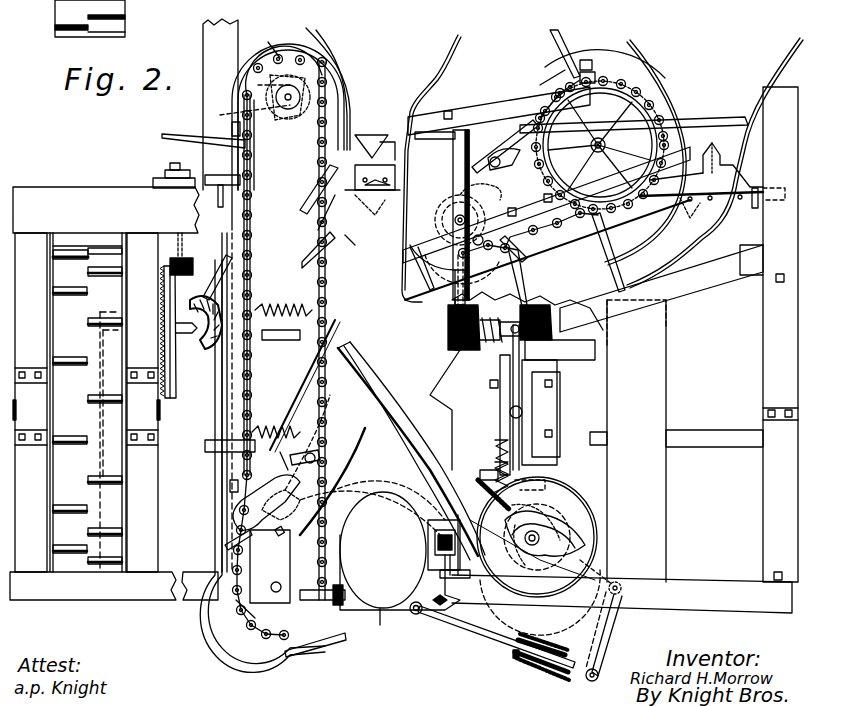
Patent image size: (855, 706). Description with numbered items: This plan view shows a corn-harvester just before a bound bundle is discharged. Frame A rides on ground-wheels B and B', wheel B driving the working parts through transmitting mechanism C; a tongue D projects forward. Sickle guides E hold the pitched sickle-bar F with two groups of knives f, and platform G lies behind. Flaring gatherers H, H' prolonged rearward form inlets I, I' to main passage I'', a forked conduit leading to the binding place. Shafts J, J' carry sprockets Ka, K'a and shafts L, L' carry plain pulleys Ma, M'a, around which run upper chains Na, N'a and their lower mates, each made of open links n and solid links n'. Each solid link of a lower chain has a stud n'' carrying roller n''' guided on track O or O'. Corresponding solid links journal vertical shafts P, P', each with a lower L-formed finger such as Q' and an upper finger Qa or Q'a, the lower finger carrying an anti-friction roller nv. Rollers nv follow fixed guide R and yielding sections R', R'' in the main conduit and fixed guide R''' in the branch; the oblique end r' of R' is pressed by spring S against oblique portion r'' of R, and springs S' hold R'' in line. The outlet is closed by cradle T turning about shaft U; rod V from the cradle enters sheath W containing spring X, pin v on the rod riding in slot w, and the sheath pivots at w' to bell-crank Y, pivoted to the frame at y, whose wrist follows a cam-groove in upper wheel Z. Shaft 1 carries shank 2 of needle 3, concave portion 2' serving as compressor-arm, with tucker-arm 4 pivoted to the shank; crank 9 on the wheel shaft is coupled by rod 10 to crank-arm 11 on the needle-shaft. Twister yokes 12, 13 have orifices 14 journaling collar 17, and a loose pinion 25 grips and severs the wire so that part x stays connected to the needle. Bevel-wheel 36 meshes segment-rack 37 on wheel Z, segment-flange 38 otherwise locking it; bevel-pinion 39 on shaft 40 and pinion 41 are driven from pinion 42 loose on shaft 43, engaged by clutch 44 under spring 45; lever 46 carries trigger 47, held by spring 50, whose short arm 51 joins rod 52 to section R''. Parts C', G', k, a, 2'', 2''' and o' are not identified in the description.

The frame A is at (401, 400).
The ground-wheel B is at (86, 402).
The ground-wheel B' is at (694, 334).
The transmitting mechanism C is at (196, 315).
The gear shaft C' is at (101, 442).
The tongue D is at (220, 295).
The sickle guides E is at (559, 152).
The sickle-bar F is at (565, 186).
The knives f is at (527, 207).
The platform G is at (360, 238).
The rear guide G' is at (569, 278).
The flaring gatherer H is at (383, 164).
The flaring gatherer H' is at (704, 159).
The inlet I is at (383, 222).
The inlet I' is at (584, 216).
The main passage I'' is at (411, 449).
The vertical shaft J is at (247, 114).
The vertical shaft J' is at (455, 232).
The sprocket Ka is at (258, 86).
The sprocket K'a is at (546, 205).
The chain roller k is at (484, 235).
The vertical shaft L is at (280, 339).
The vertical shaft L' is at (600, 145).
The plain pulley Ma is at (236, 618).
The plain pulley M'a is at (501, 183).
The endless chain Na is at (335, 92).
The endless chain N'a is at (576, 166).
The open links n is at (258, 383).
The solid links n' is at (225, 548).
The stud n'' is at (404, 280).
The roller n''' is at (393, 253).
The anti-friction roller nv is at (269, 42).
The track O is at (216, 402).
The track O' is at (605, 52).
The vertical shaft P is at (291, 341).
The vertical shaft P' is at (536, 77).
The finger Qa is at (366, 268).
The L-formed finger Q' is at (476, 271).
The finger Q'a is at (578, 164).
The fixed guide section R is at (305, 290).
The yielding guide section R' is at (305, 348).
The yielding guide section R'' is at (291, 454).
The fixed lateral guide R''' is at (507, 146).
The spring S is at (283, 305).
The springs S' is at (277, 425).
The cradle T is at (380, 551).
The vertical shaft U is at (448, 600).
The rod V is at (496, 637).
The sheath W is at (548, 653).
The spiral spring X is at (543, 640).
The pin v is at (513, 655).
The slot w is at (526, 670).
The pivot w' is at (600, 682).
The bell-crank Y is at (607, 634).
The pivot y is at (564, 574).
The upper wheel Z is at (535, 556).
The cam a is at (545, 533).
The binding-wire portion x is at (532, 538).
The vertical shaft 1 is at (268, 540).
The needle-shank 2 is at (268, 505).
The compressor-arm 2' is at (325, 465).
The lever stop 2'' is at (389, 619).
The lever pin 2''' is at (414, 622).
The needle 3 is at (445, 435).
The tucker-arm 4 is at (410, 510).
The crank 9 is at (543, 546).
The rod 10 is at (393, 507).
The crank-arm 11 is at (283, 458).
The yoke 12 is at (428, 548).
The yoke 13 is at (463, 545).
The circular orifices 14 is at (445, 564).
The cylindrical collar 17 is at (456, 573).
The pinion 25 is at (448, 530).
The bevel-wheel 36 is at (512, 540).
The segment-rack 37 is at (525, 508).
The segment-flange 38 is at (499, 552).
The bevel-pinion 39 is at (560, 480).
The shaft 40 is at (541, 412).
The bevel-pinion 41 is at (560, 350).
The bevel-pinion 42 is at (555, 344).
The shaft 43 is at (602, 351).
The clutch 44 is at (526, 315).
The spring 45 is at (480, 302).
The lever 46 is at (510, 397).
The trigger 47 is at (491, 494).
The spring 50 is at (508, 444).
The short arm 51 is at (488, 470).
The rod 52 is at (494, 469).
The guide lug o' is at (435, 278).
The oblique rear extremity r' is at (279, 347).
The oblique portion r'' is at (288, 363).